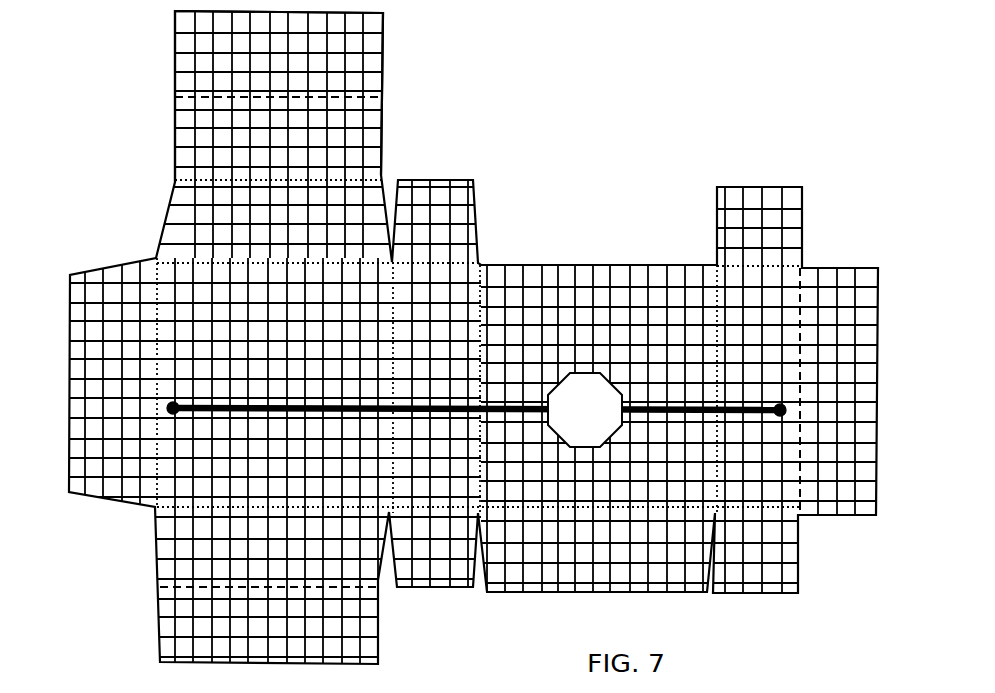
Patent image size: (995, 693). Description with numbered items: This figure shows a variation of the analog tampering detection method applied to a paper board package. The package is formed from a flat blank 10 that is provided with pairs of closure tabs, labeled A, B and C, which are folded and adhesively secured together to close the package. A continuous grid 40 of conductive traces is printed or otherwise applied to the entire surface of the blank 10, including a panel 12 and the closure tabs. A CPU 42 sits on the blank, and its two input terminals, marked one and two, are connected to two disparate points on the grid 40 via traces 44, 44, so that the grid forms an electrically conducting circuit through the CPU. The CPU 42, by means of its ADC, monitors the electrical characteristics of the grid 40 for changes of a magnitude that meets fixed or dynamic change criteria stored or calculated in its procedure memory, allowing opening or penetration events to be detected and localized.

The blank 10 is at (497, 346).
The panel of garment 12 is at (195, 60).
The continuous grid 40 is at (172, 244).
The CPU 42 is at (598, 402).
The traces 44 is at (697, 417).